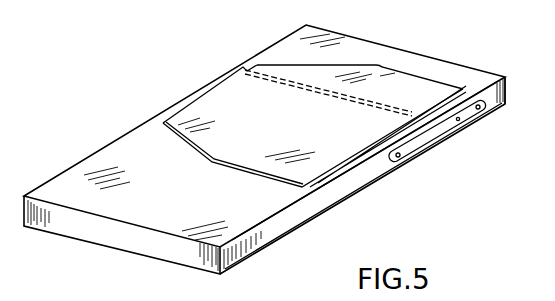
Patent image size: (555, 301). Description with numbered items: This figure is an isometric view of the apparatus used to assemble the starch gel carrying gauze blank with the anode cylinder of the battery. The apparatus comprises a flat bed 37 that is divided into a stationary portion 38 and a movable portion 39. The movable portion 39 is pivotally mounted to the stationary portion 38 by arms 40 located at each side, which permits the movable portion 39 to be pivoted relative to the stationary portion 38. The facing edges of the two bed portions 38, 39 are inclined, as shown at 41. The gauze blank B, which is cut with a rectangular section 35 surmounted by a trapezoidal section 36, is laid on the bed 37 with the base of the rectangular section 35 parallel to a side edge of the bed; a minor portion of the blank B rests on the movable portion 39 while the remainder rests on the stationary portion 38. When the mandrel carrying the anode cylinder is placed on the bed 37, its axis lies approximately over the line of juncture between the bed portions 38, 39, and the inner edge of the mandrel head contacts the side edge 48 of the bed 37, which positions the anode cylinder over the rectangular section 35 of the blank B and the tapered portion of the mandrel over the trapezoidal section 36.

The rectangular section 35 is at (354, 101).
The trapezoidal section 36 is at (253, 121).
The flat bed 37 is at (167, 266).
The stationary portion 38 is at (323, 207).
The movable portion 39 is at (506, 87).
The arms 40 is at (410, 150).
The inclined facing edges 41 is at (452, 131).
The side edge 48 is at (272, 216).
The gauze blank B is at (222, 174).